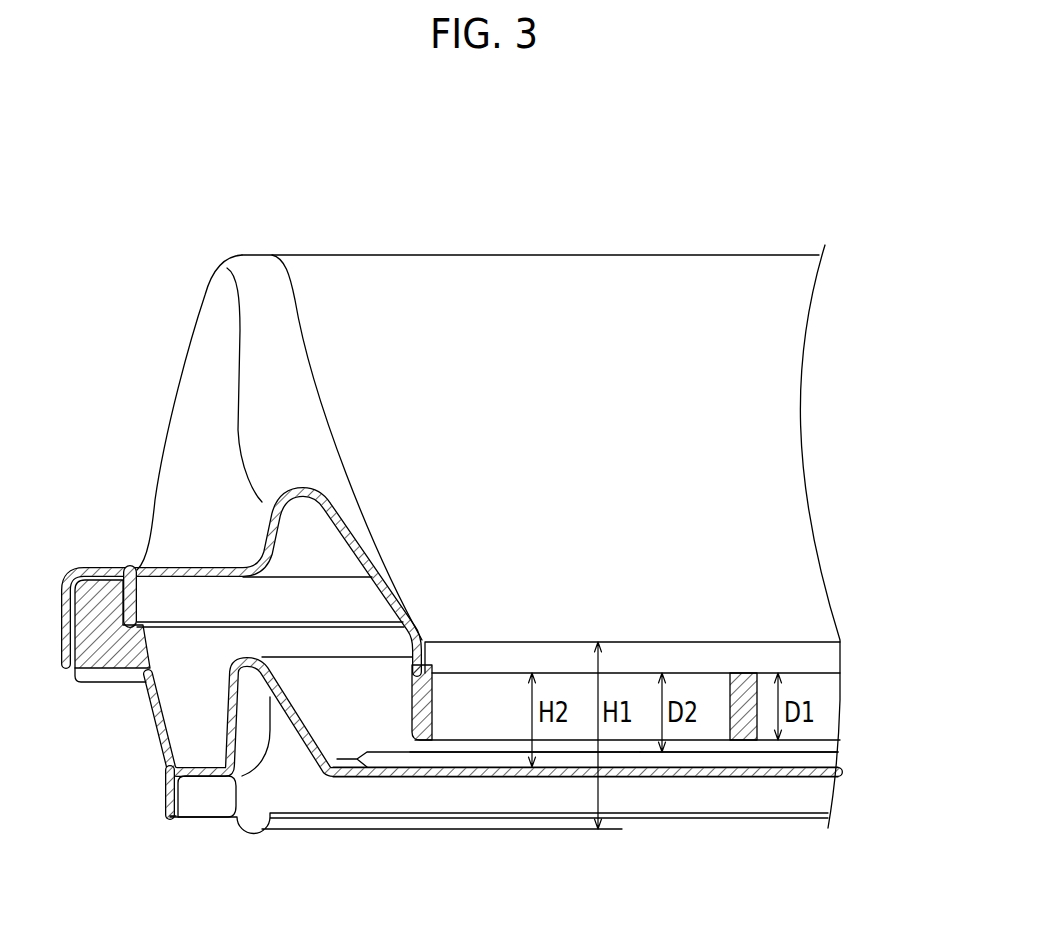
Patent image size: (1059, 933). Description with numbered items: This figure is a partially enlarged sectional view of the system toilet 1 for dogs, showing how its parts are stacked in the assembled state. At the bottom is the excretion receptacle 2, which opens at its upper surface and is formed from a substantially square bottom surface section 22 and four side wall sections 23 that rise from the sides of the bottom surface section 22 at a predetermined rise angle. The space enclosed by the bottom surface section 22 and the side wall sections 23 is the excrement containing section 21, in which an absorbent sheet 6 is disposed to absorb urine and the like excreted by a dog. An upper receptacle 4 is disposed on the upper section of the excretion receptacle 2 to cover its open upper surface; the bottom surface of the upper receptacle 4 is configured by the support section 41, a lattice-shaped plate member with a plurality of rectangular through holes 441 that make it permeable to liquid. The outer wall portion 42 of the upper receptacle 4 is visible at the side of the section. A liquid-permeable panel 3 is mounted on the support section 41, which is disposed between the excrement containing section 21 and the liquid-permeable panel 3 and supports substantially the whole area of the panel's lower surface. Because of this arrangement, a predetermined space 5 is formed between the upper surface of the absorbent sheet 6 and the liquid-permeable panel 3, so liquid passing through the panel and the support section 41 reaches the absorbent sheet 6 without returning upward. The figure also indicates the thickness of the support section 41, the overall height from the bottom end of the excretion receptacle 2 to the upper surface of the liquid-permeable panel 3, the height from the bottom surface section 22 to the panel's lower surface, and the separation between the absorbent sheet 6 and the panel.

The system toilet for dogs 1 is at (670, 200).
The excretion receptacle 2 is at (682, 793).
The liquid-permeable panel 3 is at (667, 655).
The upper receptacle 4 is at (198, 281).
The space 5 is at (505, 710).
The absorbent sheet 6 is at (770, 760).
The excrement containing section 21 is at (433, 752).
The bottom surface section 22 is at (480, 778).
The side wall section 23 is at (287, 718).
The support section 41 is at (745, 687).
The frame outer wall 42 is at (308, 347).
The through hole 441 is at (480, 695).